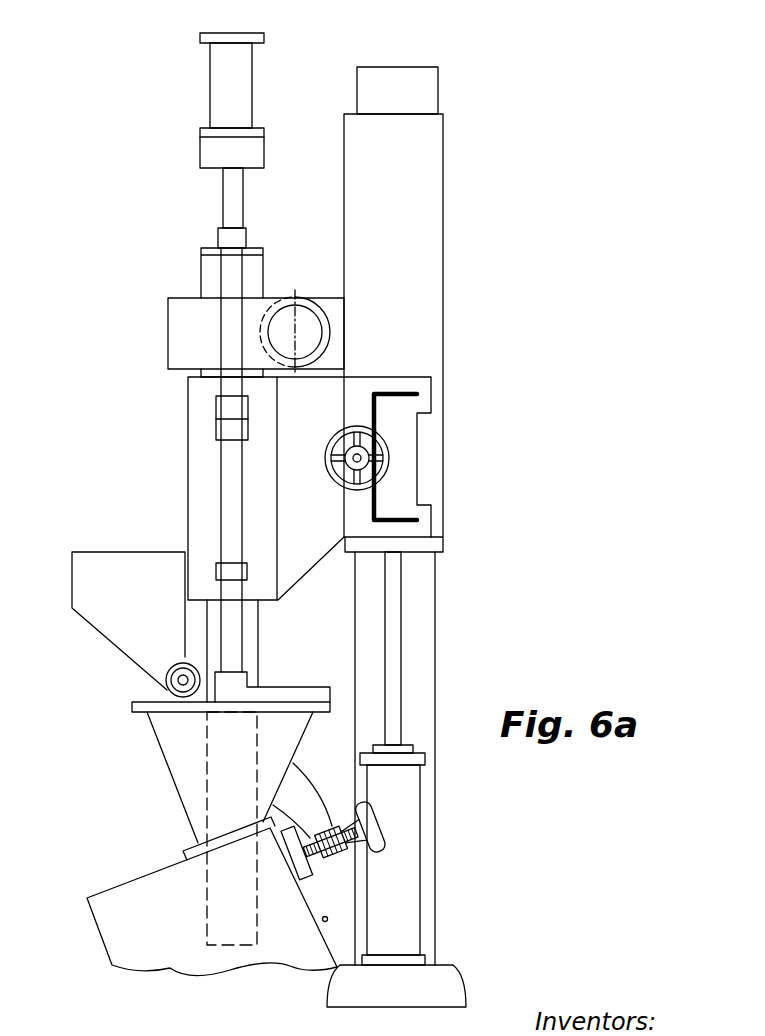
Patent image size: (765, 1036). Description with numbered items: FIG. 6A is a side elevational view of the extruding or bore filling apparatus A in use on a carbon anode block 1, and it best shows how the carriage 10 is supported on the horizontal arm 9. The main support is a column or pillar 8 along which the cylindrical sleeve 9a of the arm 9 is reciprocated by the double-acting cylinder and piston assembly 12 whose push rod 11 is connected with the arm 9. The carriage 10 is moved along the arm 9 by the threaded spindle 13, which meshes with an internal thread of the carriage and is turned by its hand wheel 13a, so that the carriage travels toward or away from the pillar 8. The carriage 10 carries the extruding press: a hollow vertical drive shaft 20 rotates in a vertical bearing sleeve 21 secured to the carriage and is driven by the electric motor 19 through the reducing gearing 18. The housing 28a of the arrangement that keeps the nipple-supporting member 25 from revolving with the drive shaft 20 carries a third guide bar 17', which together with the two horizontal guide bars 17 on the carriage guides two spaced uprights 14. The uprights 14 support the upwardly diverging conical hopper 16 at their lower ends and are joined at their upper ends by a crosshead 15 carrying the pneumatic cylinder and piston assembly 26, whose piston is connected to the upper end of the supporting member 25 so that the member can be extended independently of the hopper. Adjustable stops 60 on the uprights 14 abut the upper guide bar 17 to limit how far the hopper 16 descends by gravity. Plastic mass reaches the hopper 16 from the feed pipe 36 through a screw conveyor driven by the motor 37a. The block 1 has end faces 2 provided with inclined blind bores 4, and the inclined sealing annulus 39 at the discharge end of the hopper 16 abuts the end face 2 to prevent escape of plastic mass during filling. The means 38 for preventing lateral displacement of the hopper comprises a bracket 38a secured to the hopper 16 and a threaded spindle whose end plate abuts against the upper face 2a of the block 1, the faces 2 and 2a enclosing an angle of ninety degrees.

The extruding or bore filling apparatus A is at (469, 126).
The pneumatic cylinder and piston assembly 26 is at (226, 87).
The crosshead 15 is at (213, 148).
The nipple-supporting member 25 is at (233, 210).
The third guide bar 17' is at (267, 225).
The housing 28a is at (215, 272).
The reducing gearing 18 is at (193, 330).
The electric motor 19 is at (302, 300).
The cylindrical sleeve 9a is at (440, 250).
The vertical bearing sleeve 21 is at (188, 467).
The uprights 14 is at (230, 517).
The adjustable stops 60 is at (225, 405).
The horizontal guide bars 17 is at (203, 499).
The carriage 10 is at (420, 386).
The horizontal arm 9 is at (405, 428).
The spindle 13 is at (370, 457).
The hand wheel 13a is at (337, 447).
The push rod 11 is at (393, 607).
The column or pillar 8 is at (413, 682).
The hollow vertical drive shaft 20 is at (213, 630).
The feed pipe 36 is at (100, 618).
The motor 37a is at (165, 682).
The conical hopper 16 is at (178, 745).
The bracket 38a is at (305, 806).
The means for preventing lateral displacements 38 is at (306, 777).
The inclined blind bores 4 is at (207, 923).
The end faces 2 is at (135, 878).
The carbon anode block 1 is at (110, 908).
The upper side or face 2a is at (322, 922).
The inclined sealing annulus 39 is at (187, 855).
The cylinder and piston assembly 12 is at (405, 862).